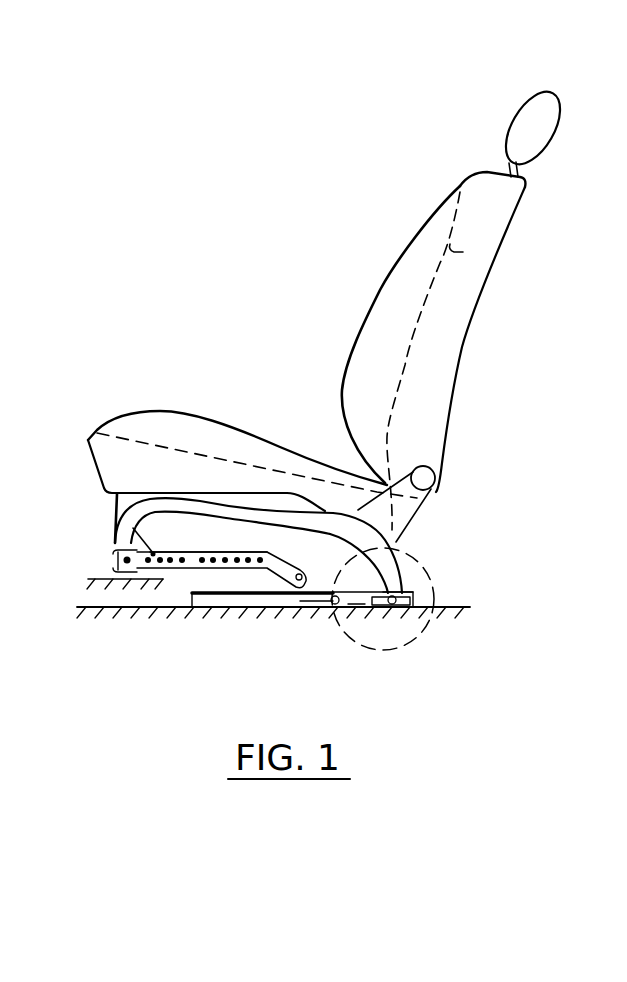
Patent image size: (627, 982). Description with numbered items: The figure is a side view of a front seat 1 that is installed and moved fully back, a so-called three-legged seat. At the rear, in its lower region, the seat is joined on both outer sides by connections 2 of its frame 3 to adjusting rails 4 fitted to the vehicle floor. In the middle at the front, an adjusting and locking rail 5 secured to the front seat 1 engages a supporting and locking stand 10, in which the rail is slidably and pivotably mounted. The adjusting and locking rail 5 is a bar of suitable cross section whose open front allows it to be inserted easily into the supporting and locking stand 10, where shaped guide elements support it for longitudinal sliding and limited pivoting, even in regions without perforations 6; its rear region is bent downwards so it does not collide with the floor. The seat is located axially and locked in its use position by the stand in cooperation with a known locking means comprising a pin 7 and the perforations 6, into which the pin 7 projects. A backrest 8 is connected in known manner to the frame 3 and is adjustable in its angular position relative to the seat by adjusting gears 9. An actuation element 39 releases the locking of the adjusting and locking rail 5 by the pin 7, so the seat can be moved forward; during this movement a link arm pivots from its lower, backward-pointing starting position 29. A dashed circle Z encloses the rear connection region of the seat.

The front seat 1 is at (299, 395).
The connections 2 is at (432, 563).
The frame 3 is at (213, 433).
The adjusting rails 4 is at (287, 597).
The adjusting and locking rail 5 is at (221, 552).
The perforations 6 is at (190, 558).
The pin 7 is at (117, 560).
The backrest 8 is at (440, 331).
The adjusting gears 9 is at (425, 480).
The supporting and locking stand 10 is at (97, 585).
The starting position 29 is at (360, 597).
The actuation element 39 is at (177, 483).
The detail zone Z is at (440, 615).